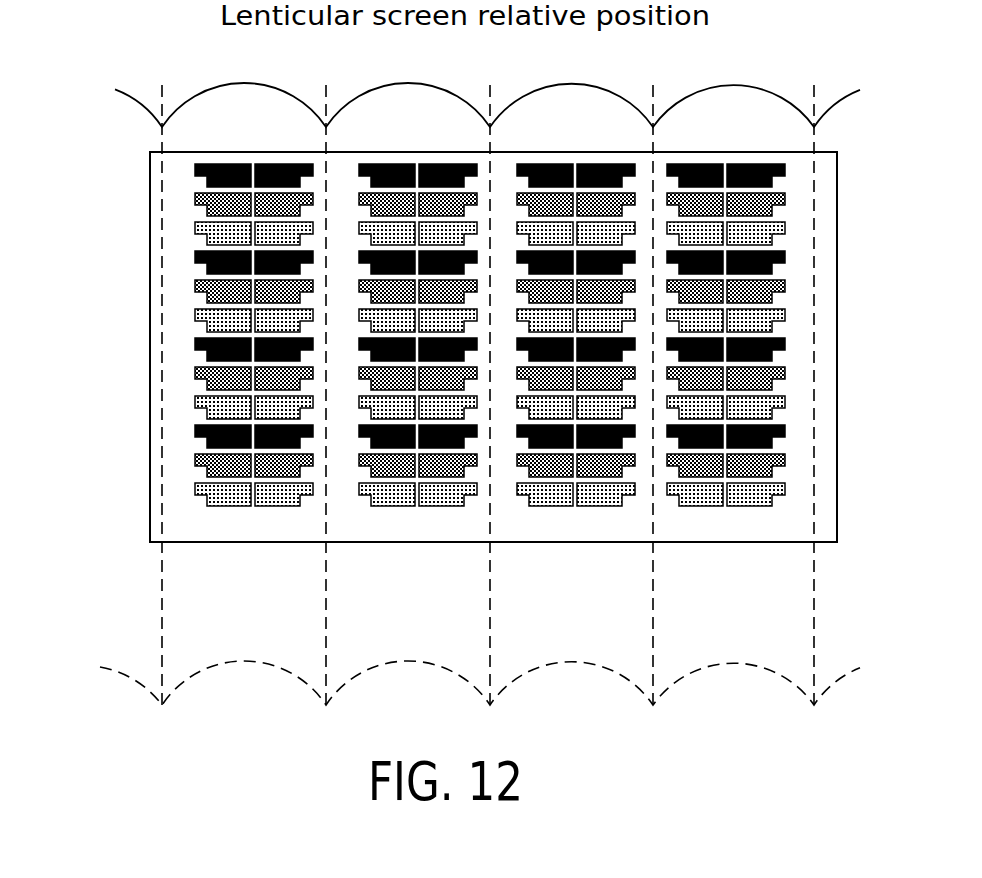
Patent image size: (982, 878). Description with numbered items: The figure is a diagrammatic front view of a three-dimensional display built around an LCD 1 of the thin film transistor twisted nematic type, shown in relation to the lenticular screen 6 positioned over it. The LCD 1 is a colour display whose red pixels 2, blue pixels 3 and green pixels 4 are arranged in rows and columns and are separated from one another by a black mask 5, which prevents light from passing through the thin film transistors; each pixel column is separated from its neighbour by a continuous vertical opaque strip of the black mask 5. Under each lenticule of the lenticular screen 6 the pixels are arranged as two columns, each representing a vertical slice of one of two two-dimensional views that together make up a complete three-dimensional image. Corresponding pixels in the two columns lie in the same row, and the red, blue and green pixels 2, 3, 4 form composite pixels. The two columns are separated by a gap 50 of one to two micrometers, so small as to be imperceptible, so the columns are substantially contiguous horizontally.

The LCD 1 is at (845, 393).
The red pixels 2 is at (193, 170).
The blue pixels 3 is at (193, 197).
The green pixels 4 is at (200, 235).
The black mask 5 is at (490, 522).
The lenticular screen 6 is at (413, 100).
The gap 50 is at (255, 510).